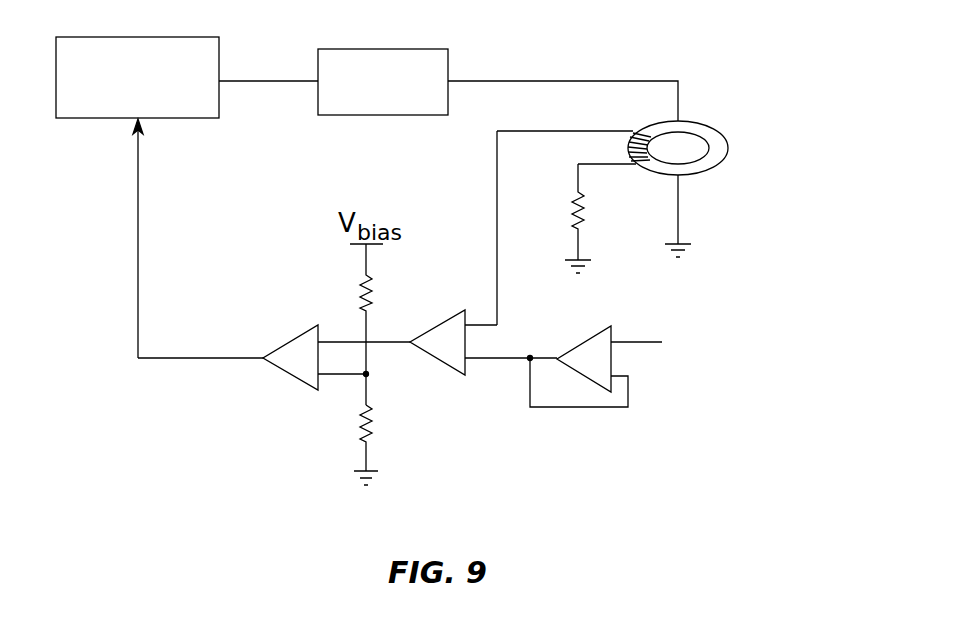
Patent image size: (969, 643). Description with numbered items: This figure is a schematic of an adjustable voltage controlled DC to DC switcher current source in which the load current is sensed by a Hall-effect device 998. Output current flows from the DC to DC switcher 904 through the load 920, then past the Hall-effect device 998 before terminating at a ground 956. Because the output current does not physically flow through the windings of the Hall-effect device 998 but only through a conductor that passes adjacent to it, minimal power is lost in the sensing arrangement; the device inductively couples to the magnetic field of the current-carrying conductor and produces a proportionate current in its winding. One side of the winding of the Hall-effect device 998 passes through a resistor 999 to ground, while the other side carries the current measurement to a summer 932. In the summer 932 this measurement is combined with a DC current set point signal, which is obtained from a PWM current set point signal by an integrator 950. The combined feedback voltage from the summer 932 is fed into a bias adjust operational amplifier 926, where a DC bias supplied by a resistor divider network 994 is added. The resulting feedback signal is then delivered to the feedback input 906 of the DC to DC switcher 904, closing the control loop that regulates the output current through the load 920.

The DC to DC switcher 904 is at (82, 119).
The feedback input 906 is at (140, 120).
The load 920 is at (398, 49).
The Hall-effect device 998 is at (716, 130).
The ground 956 is at (684, 243).
The resistor 999 is at (575, 203).
The summer 932 is at (435, 360).
The bias adjust operational amplifier 926 is at (286, 374).
The integrator 950 is at (580, 345).
The resistor divider network 994 is at (334, 455).